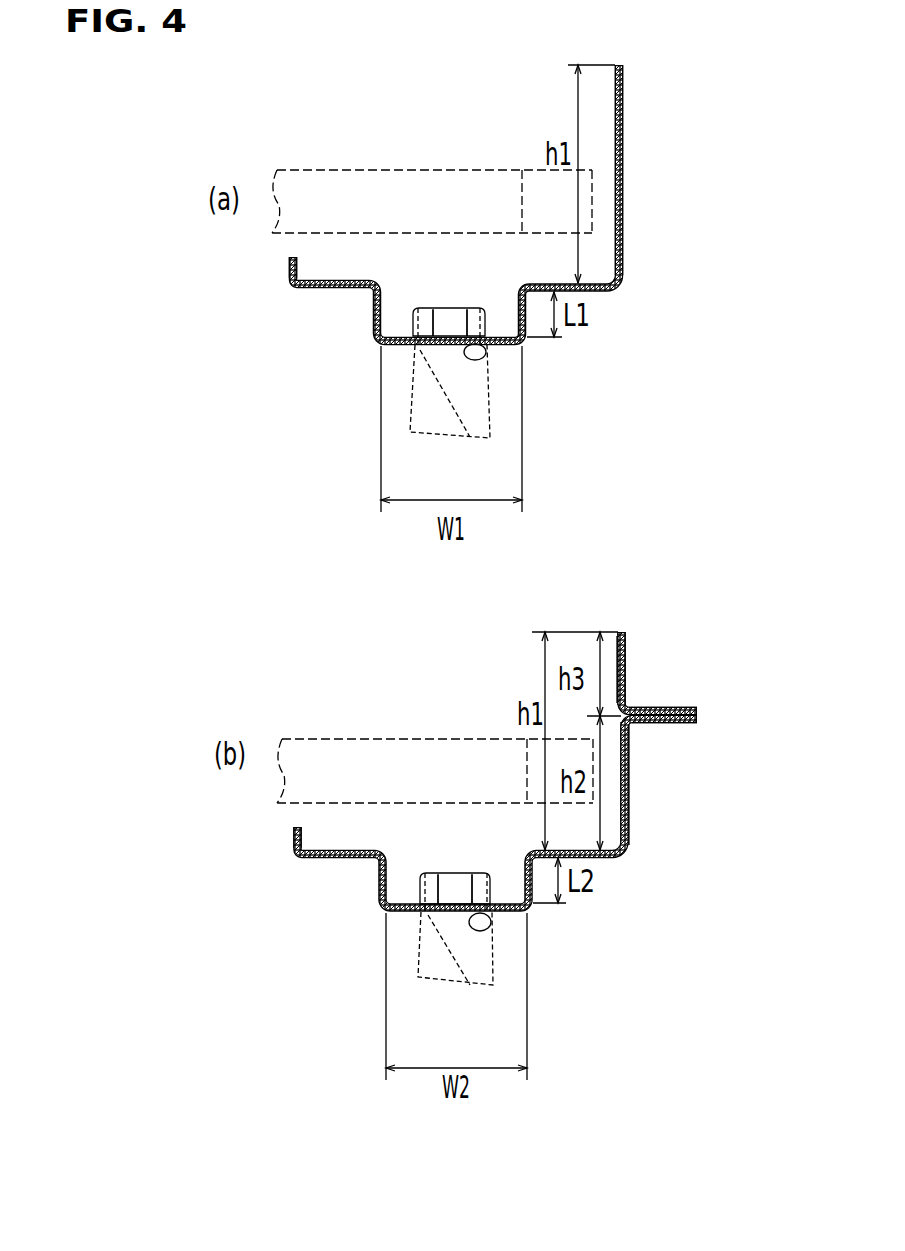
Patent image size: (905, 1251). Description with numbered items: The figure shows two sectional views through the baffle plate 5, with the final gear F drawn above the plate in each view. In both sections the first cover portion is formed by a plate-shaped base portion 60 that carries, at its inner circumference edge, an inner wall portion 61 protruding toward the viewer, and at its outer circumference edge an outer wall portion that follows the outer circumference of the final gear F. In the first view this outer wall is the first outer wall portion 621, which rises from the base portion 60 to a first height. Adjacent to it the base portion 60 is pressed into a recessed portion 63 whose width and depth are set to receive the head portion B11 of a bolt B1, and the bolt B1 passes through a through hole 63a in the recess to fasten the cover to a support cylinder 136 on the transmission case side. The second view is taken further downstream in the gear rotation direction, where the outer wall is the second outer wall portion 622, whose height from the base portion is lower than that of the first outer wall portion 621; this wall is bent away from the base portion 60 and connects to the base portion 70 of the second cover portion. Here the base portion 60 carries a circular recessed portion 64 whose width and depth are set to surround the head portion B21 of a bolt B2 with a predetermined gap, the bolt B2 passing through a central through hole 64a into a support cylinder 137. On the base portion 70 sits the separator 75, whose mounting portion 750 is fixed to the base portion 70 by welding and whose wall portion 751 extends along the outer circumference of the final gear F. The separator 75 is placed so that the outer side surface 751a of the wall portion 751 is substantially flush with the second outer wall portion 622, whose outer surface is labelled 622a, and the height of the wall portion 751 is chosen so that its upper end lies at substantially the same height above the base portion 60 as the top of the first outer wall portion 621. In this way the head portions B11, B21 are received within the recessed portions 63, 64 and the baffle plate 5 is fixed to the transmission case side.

The baffle plate 5 is at (643, 238).
The base portion 60 is at (319, 290).
The inner wall portion 61 is at (289, 269).
The recessed portion 63 is at (413, 320).
The through hole 63a is at (486, 356).
The recessed portion 64 is at (420, 888).
The through hole 64a is at (491, 925).
The base portion 70 is at (672, 724).
The separator 75 is at (706, 663).
The support cylinder 136 is at (440, 398).
The support cylinder 137 is at (441, 971).
The first outer wall portion 621 is at (623, 139).
The second outer wall portion 622 is at (630, 790).
The outer surface of vertical plate 622a is at (617, 821).
The mounting portion 750 is at (698, 711).
The wall portion 751 is at (627, 650).
The outer side surface 751a is at (614, 681).
The final gear F is at (315, 184).
The bolt B1 is at (476, 303).
The head portion B11 is at (433, 307).
The bolt B2 is at (480, 870).
The head portion B21 is at (440, 872).